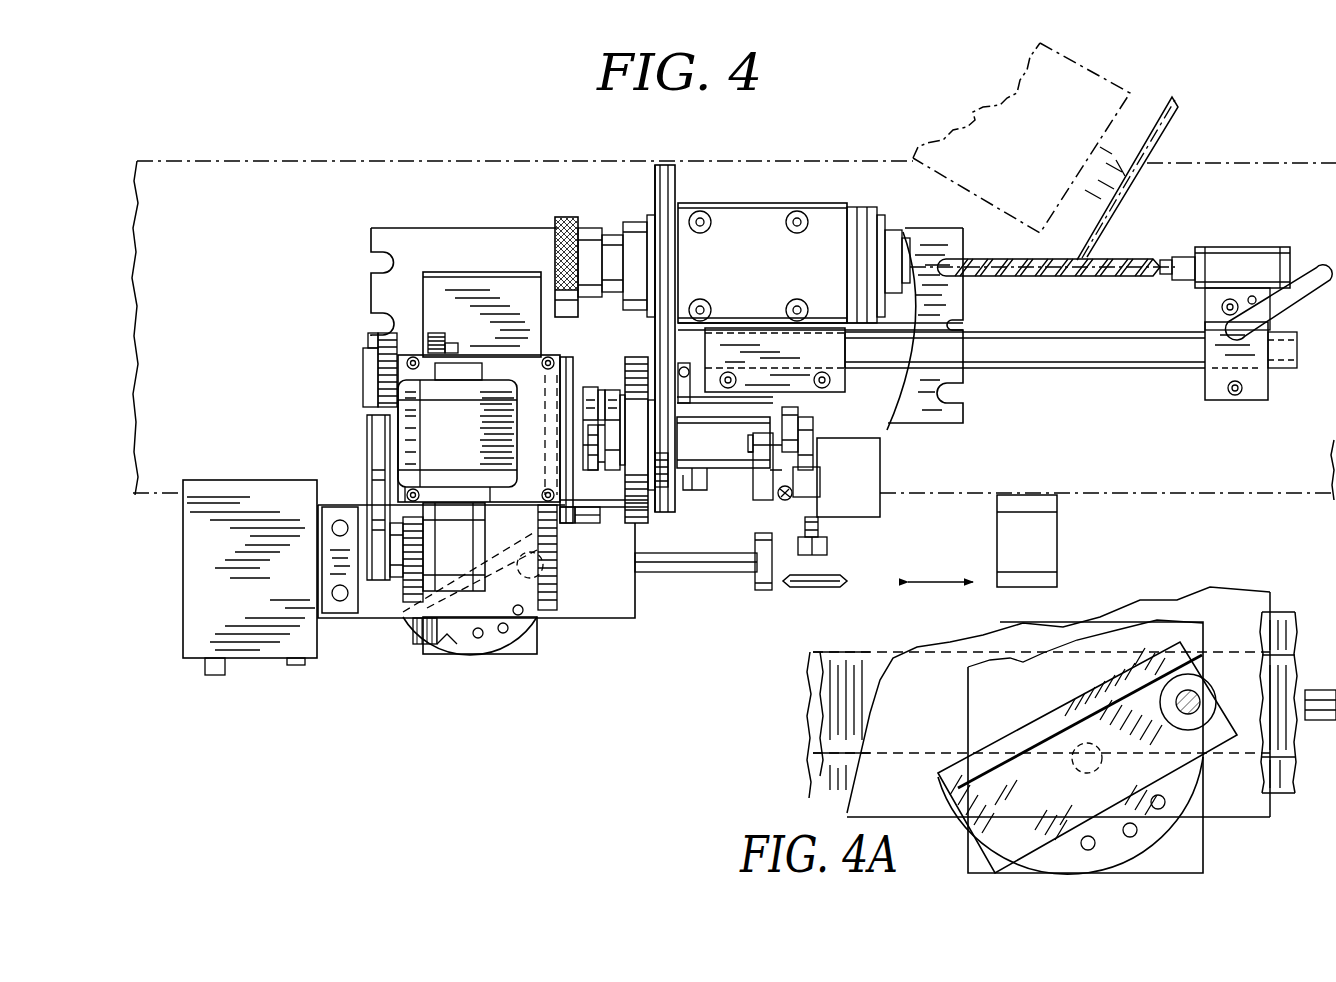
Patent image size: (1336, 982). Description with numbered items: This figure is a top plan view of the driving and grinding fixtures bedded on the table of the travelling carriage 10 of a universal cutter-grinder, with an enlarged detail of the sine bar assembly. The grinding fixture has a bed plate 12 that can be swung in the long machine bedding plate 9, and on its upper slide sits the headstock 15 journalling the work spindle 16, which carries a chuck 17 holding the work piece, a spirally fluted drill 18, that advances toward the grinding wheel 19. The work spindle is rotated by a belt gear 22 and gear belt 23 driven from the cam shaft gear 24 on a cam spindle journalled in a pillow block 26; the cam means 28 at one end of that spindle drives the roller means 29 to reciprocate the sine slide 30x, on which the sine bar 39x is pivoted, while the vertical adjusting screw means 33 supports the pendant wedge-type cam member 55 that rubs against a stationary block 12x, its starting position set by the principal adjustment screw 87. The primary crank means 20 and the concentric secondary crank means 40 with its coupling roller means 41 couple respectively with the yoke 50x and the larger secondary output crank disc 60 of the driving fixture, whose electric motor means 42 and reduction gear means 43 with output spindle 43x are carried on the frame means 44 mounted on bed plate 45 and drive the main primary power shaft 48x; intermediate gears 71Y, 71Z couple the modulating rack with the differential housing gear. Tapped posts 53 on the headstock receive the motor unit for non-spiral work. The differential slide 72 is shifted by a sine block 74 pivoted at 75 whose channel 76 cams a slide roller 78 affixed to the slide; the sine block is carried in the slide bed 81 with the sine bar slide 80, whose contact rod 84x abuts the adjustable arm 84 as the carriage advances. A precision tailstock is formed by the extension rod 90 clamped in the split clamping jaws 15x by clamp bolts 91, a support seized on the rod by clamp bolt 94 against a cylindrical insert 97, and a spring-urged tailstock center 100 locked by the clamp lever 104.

In FIG. 4, the machine bedding plate 9 is at (392, 238).
In FIG. 4, the travelling carriage 10 is at (268, 245).
In FIG. 4, the bed plate 12 is at (912, 306).
In FIG. 4, the stationary block 12x is at (880, 462).
In FIG. 4, the headstock 15 is at (770, 275).
In FIG. 4, the split clamping jaws 15x is at (848, 351).
In FIG. 4, the work spindle 16 is at (605, 232).
In FIG. 4, the chuck 17 is at (910, 243).
In FIG. 4, the spirally fluted drill 18 is at (1017, 260).
In FIG. 4, the grinding wheel 19 is at (1107, 227).
In FIG. 4, the primary crank means 20 is at (615, 460).
In FIG. 4, the belt gear 22 is at (653, 181).
In FIG. 4, the gear belt 23 is at (668, 183).
In FIG. 4, the cam shaft gear 24 is at (660, 492).
In FIG. 4, the pillow block 26 is at (724, 452).
In FIG. 4, the cam means 28 is at (798, 415).
In FIG. 4, the roller means 29 is at (813, 435).
In FIG. 4, the sine slide 30x is at (758, 488).
In FIG. 4, the vertical adjusting screw means 33 is at (782, 498).
In FIG. 4, the sine bar 39x is at (736, 494).
In FIG. 4, the secondary crank means 40 is at (645, 505).
In FIG. 4, the coupling roller means 41 is at (580, 518).
In FIG. 4, the electric motor means 42 is at (464, 433).
In FIG. 4, the reduction gear means 43 is at (470, 522).
In FIG. 4, the output spindle 43x is at (370, 518).
In FIG. 4, the frame means 44 is at (403, 582).
In FIG. 4, the bed plate 45 is at (486, 257).
In FIG. 4, the main primary power shaft 48x is at (366, 445).
In FIG. 4, the yoke 50x is at (595, 385).
In FIG. 4, the tapped posts 53 is at (786, 228).
In FIG. 4, the wedge-type cam member 55 is at (820, 492).
In FIG. 4, the secondary output crank disc 60 is at (565, 522).
In FIG. 4, the intermediate gear 71Y is at (378, 378).
In FIG. 4, the intermediate gear 71Z is at (437, 333).
In FIG. 4, the differential slide 72 is at (534, 320).
In FIG. 4A, the differential slide 72 is at (1185, 856).
In FIG. 4, the sine block 74 is at (463, 642).
In FIG. 4A, the sine block 74 is at (1125, 813).
In FIG. 4A, the pivot 75 is at (1072, 768).
In FIG. 4, the channel 76 is at (425, 630).
In FIG. 4A, the channel 76 is at (990, 812).
In FIG. 4, the slide roller 78 is at (473, 585).
In FIG. 4A, the slide roller 78 is at (1208, 690).
In FIG. 4, the sine bar slide 80 is at (637, 610).
In FIG. 4A, the sine bar slide 80 is at (1290, 684).
In FIG. 4, the slide bed 81 is at (598, 587).
In FIG. 4A, the slide bed 81 is at (1243, 623).
In FIG. 4, the adjustable arm 84 is at (848, 581).
In FIG. 4, the contact rod 84x is at (665, 565).
In FIG. 4, the principal adjustment screw 87 is at (828, 548).
In FIG. 4, the extension rod 90 is at (1102, 364).
In FIG. 4, the clamp bolts 91 is at (728, 372).
In FIG. 4, the clamp bolt 94 is at (1230, 396).
In FIG. 4, the cylindrical insert 97 is at (1270, 387).
In FIG. 4, the tailstock center 100 is at (1168, 257).
In FIG. 4, the clamp lever 104 is at (1310, 277).